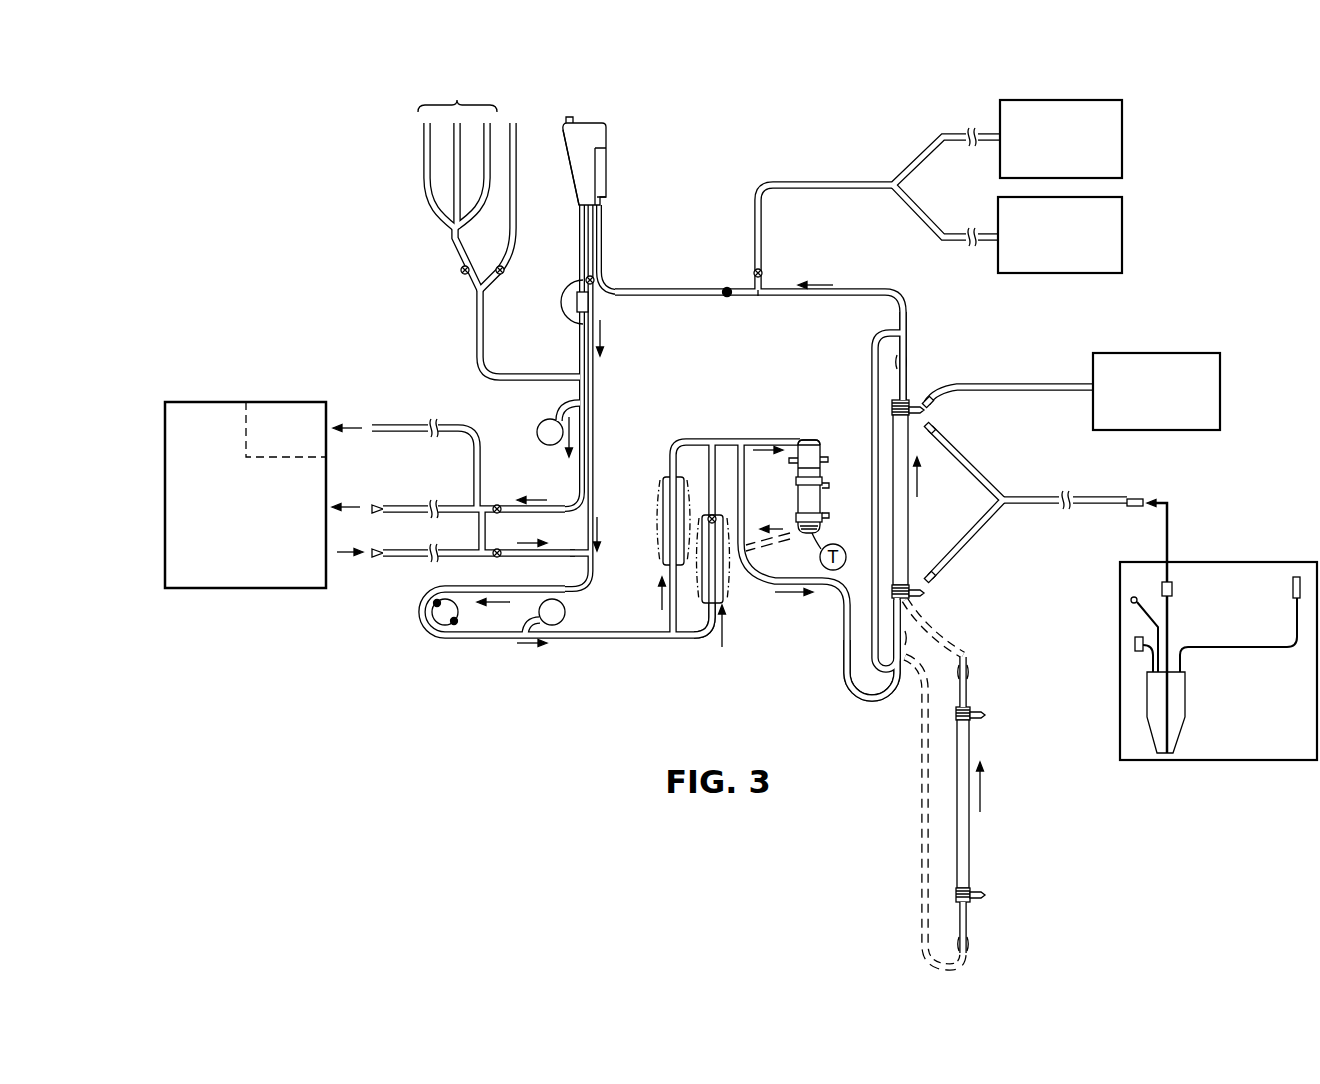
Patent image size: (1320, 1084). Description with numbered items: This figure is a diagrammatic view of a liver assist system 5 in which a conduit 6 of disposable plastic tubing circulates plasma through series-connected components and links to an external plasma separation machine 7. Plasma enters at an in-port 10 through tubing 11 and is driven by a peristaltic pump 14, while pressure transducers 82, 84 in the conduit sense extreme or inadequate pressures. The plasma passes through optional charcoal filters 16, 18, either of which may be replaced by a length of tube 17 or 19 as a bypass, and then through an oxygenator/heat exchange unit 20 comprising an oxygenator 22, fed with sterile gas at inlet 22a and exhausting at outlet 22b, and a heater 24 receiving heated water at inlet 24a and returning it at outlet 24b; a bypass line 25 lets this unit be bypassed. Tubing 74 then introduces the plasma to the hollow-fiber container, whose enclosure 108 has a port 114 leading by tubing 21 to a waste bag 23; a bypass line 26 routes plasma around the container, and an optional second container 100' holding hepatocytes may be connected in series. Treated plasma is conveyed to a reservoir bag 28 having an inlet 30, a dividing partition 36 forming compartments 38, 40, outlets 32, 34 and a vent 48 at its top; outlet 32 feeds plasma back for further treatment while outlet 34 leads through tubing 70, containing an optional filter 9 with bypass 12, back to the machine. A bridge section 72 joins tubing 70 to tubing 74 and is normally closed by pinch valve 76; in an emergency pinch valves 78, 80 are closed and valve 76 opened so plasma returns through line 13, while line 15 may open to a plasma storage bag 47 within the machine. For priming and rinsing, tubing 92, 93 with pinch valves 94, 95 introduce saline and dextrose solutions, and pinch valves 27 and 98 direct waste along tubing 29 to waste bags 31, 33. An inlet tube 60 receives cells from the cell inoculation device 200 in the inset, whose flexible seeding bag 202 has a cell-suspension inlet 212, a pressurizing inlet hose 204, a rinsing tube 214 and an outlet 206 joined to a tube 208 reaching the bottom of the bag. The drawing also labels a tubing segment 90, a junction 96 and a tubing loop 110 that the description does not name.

The liver assist system 5 is at (357, 297).
The conduit 6 is at (669, 284).
The plasma separation machine 7 is at (272, 589).
The filter 9 is at (590, 306).
The in-port 10 is at (377, 560).
The tubing 11 is at (400, 558).
The bypass 12 is at (561, 316).
The line 13 is at (398, 506).
The peristaltic pump 14 is at (445, 626).
The line 15 is at (400, 426).
The charcoal filter 16 is at (661, 532).
The tube 17 is at (662, 495).
The charcoal filter 18 is at (729, 589).
The tube 19 is at (692, 605).
The oxygenator/heat exchange unit 20 is at (813, 427).
The tubing 21 is at (1015, 390).
The oxygenator 22 is at (808, 535).
The inlet 22a is at (829, 485).
The outlet 22b is at (829, 516).
The waste bag 23 is at (1160, 353).
The heater 24 is at (805, 438).
The inlet 24a is at (792, 462).
The outlet 24b is at (828, 459).
The bypass line 25 is at (746, 508).
The bypass line 26 is at (872, 357).
The pinch valve 27 is at (763, 272).
The reservoir bag 28 is at (598, 121).
The tubing 29 is at (815, 188).
The inlet 30 is at (601, 216).
The waste bag 31 is at (1123, 150).
The outlet 32 is at (580, 217).
The waste bag 33 is at (1123, 212).
The outlet 34 is at (592, 238).
The dividing partition 36 is at (597, 150).
The compartment 38 is at (606, 175).
The compartment 40 is at (582, 151).
The plasma storage bag 47 is at (276, 401).
The vent 48 is at (566, 118).
The inlet tube 60 is at (1096, 498).
The tubing 70 is at (563, 505).
The bridge section 72 is at (536, 536).
The tubing 74 is at (553, 558).
The pinch valve 76 is at (478, 532).
The pinch valve 78 is at (497, 505).
The pinch valve 80 is at (493, 557).
The pressure transducer 82 is at (540, 423).
The pressure transducer 84 is at (566, 612).
The tubing 90 is at (483, 305).
The tubing 92 is at (457, 182).
The tubing 93 is at (515, 235).
The pinch valve 94 is at (462, 270).
The pinch valve 95 is at (503, 270).
The junction 96 is at (762, 298).
The pinch valve 98 is at (722, 295).
The second container 100' is at (962, 783).
The enclosure 108 is at (906, 351).
The tubing loop 110 is at (853, 673).
The port 114 is at (925, 410).
The cell inoculation device 200 is at (1141, 688).
The seeding bag 202 is at (1188, 690).
The inlet hose 204 is at (1135, 643).
The outlet 206 is at (1173, 587).
The tube 208 is at (1170, 613).
The inlet 212 is at (1131, 600).
The rinsing tube 214 is at (1292, 590).